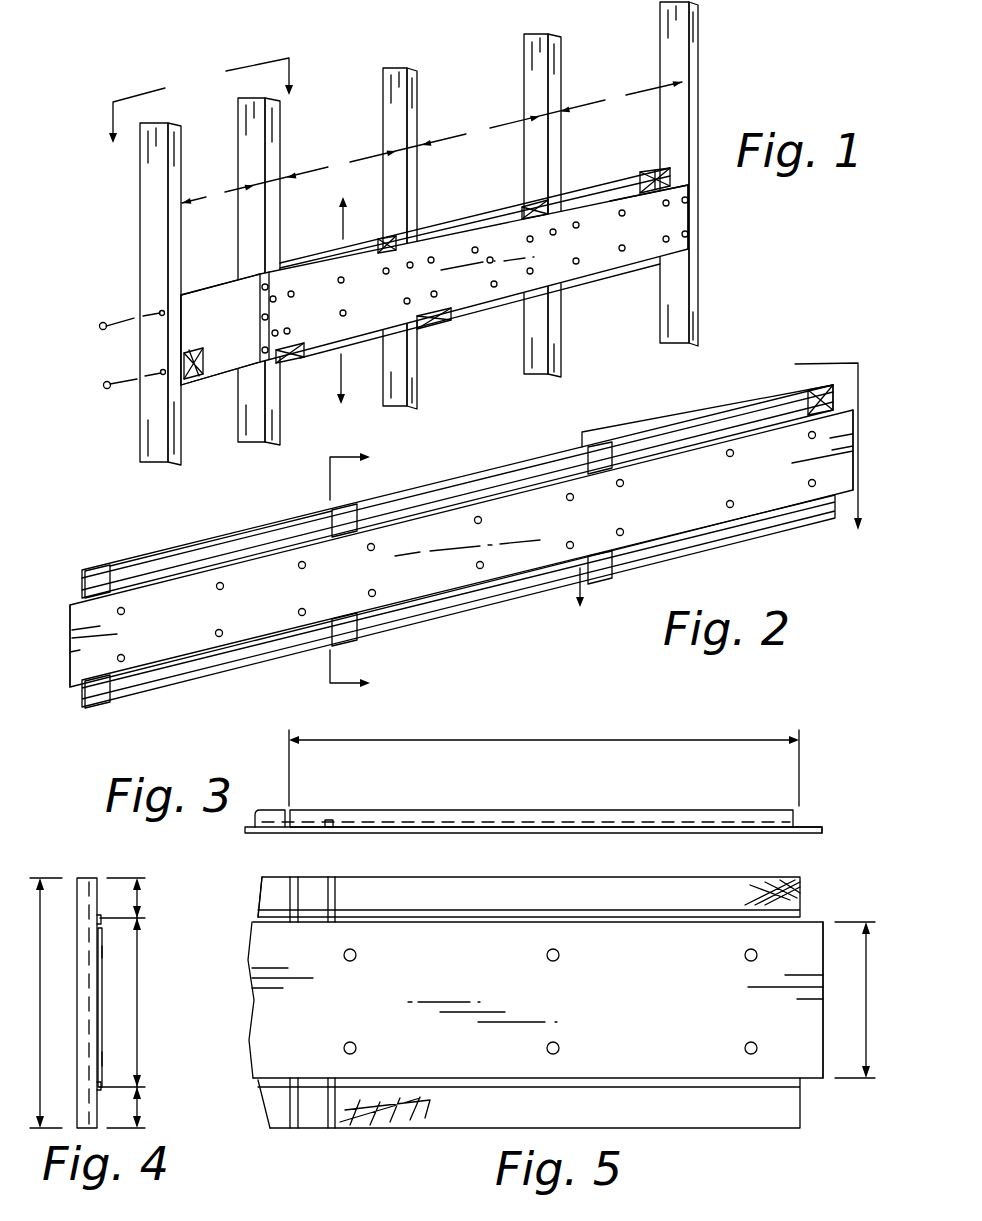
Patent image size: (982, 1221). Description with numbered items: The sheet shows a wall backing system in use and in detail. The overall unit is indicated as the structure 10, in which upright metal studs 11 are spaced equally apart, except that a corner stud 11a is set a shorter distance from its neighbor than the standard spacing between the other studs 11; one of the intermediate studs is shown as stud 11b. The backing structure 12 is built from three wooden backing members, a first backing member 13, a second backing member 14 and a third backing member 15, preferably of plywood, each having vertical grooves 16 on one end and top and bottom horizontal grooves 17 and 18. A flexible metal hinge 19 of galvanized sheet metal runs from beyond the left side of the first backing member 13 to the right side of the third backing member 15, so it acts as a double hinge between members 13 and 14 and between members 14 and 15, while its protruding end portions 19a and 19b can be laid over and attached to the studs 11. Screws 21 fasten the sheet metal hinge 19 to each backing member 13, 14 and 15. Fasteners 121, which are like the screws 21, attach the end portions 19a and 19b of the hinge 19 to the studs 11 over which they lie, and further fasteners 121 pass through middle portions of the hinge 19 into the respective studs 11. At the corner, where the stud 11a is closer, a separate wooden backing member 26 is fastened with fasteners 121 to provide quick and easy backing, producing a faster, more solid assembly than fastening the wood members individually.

In FIG. 1, the structure 10 is at (733, 83).
In FIG. 1, the upright metal studs 11 is at (275, 155).
In FIG. 1, the stud 11a is at (174, 189).
In FIG. 1, the intermediate stud 11b is at (397, 63).
In FIG. 2, the backing structure 12 is at (713, 367).
In FIG. 1, the first backing member 13 is at (318, 259).
In FIG. 2, the first backing member 13 is at (207, 542).
In FIG. 1, the second backing member 14 is at (465, 317).
In FIG. 2, the second backing member 14 is at (457, 478).
In FIG. 3, the second backing member 14 is at (268, 817).
In FIG. 4, the second backing member 14 is at (77, 916).
In FIG. 5, the second backing member 14 is at (275, 890).
In FIG. 1, the third backing member 15 is at (617, 192).
In FIG. 2, the third backing member 15 is at (668, 423).
In FIG. 3, the third backing member 15 is at (628, 815).
In FIG. 5, the third backing member 15 is at (652, 890).
In FIG. 2, the vertical grooves 16 is at (118, 572).
In FIG. 5, the vertical grooves 16 is at (332, 895).
In FIG. 2, the top horizontal groove 17 is at (163, 572).
In FIG. 4, the top horizontal groove 17 is at (97, 918).
In FIG. 5, the top horizontal groove 17 is at (390, 913).
In FIG. 2, the bottom horizontal groove 18 is at (180, 676).
In FIG. 4, the bottom horizontal groove 18 is at (98, 1088).
In FIG. 5, the bottom horizontal groove 18 is at (480, 1088).
In FIG. 2, the flexible metal hinge 19 is at (90, 657).
In FIG. 3, the flexible metal hinge 19 is at (523, 832).
In FIG. 4, the flexible metal hinge 19 is at (102, 983).
In FIG. 5, the flexible metal hinge 19 is at (503, 935).
In FIG. 2, the end portion of the hinge 19a is at (78, 608).
In FIG. 1, the end portion of the hinge 19b is at (683, 221).
In FIG. 2, the end portion of the hinge 19b is at (842, 487).
In FIG. 3, the end portion of the hinge 19b is at (808, 822).
In FIG. 5, the end portion of the hinge 19b is at (798, 937).
In FIG. 1, the screws 21 is at (342, 317).
In FIG. 2, the screws 21 is at (298, 563).
In FIG. 4, the screws 21 is at (105, 952).
In FIG. 5, the screws 21 is at (357, 953).
In FIG. 1, the backing member 26 is at (191, 326).
In FIG. 1, the fasteners 121 is at (119, 315).